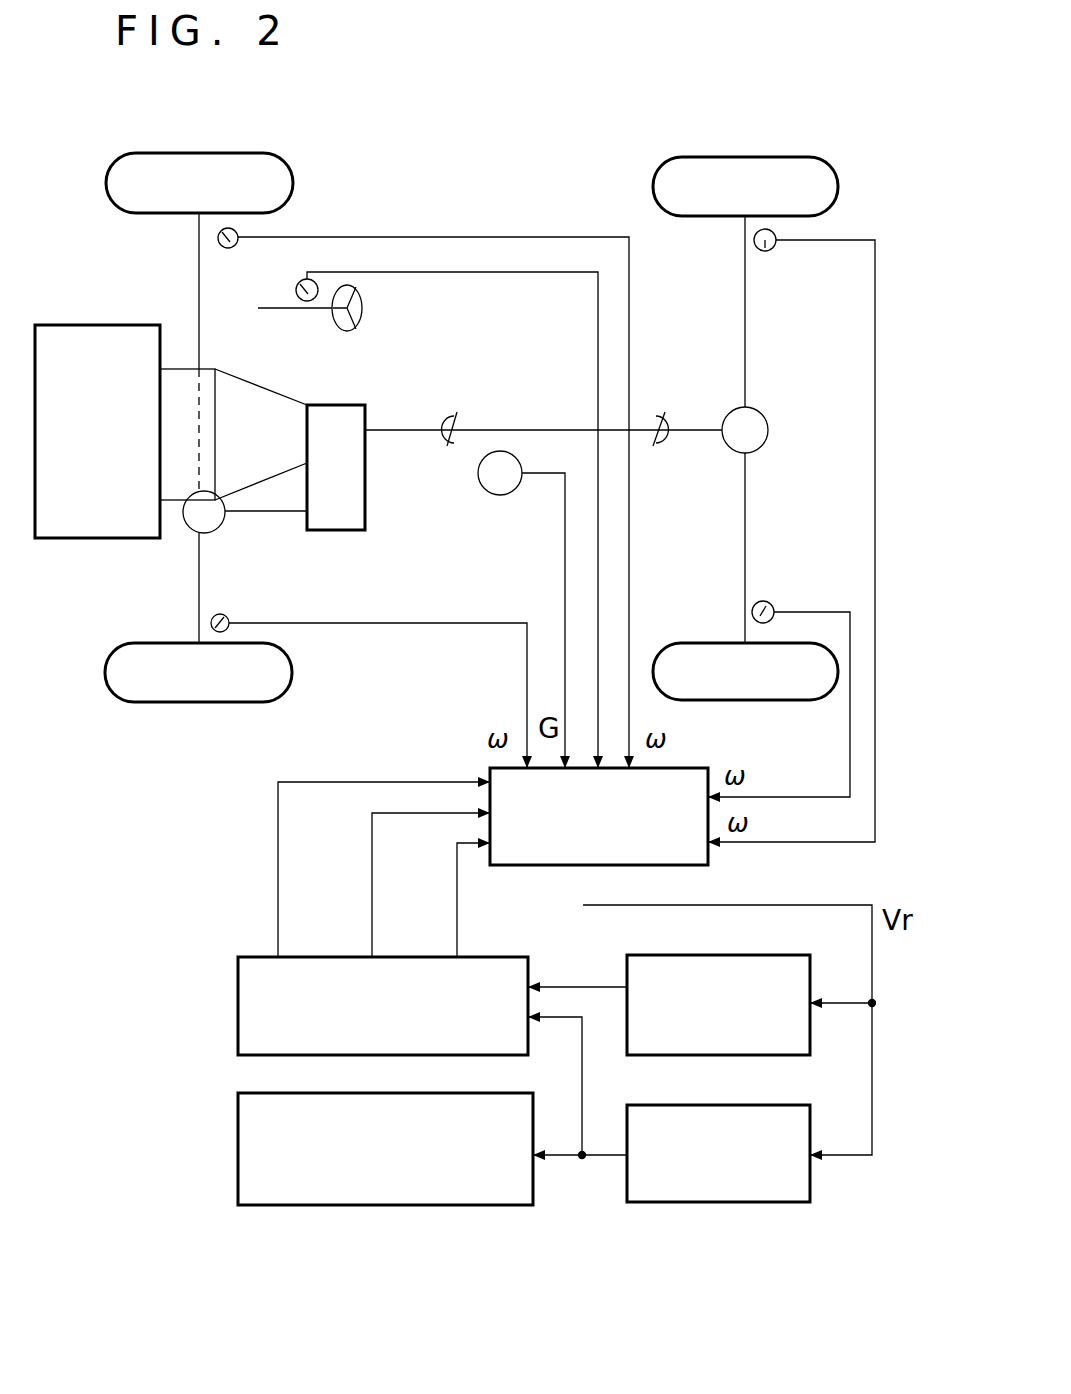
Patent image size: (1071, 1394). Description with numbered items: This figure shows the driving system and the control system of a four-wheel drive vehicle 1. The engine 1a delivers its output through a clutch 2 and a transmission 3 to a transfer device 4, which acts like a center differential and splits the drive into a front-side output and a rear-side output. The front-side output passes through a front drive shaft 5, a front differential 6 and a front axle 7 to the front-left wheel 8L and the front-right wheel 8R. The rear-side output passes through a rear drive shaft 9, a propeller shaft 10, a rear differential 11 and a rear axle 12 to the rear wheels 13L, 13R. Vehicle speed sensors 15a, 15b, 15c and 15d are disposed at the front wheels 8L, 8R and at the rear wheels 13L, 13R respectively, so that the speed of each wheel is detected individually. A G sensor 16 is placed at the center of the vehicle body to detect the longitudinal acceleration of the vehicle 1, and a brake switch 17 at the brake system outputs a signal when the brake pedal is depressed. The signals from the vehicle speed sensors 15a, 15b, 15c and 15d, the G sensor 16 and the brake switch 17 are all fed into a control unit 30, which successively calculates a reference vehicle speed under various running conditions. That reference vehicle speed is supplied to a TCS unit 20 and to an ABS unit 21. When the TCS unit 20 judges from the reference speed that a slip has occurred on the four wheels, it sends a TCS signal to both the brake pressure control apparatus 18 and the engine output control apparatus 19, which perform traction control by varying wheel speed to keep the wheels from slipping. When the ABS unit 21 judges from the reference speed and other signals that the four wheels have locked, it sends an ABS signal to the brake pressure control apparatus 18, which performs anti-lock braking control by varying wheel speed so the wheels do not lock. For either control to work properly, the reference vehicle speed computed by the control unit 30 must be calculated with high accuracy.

The four-wheel drive vehicle 1 is at (412, 175).
The engine 1a is at (65, 528).
The clutch 2 is at (180, 383).
The transmission 3 is at (263, 407).
The transfer device 4 is at (328, 520).
The front drive shaft 5 is at (245, 513).
The front differential 6 is at (195, 522).
The front axle 7 is at (199, 617).
The front-right wheel 8R is at (218, 173).
The front-left wheel 8L is at (182, 702).
The rear drive shaft 9 is at (385, 432).
The propeller shaft 10 is at (558, 431).
The rear differential 11 is at (760, 433).
The rear axle 12 is at (745, 508).
The rear-right wheel 13R is at (755, 175).
The rear wheel 13L is at (777, 685).
The vehicle speed sensor 15a is at (228, 248).
The vehicle speed sensor 15b is at (226, 614).
The vehicle speed sensor 15c is at (765, 251).
The vehicle speed sensor 15d is at (768, 602).
The G sensor 16 is at (488, 477).
The brake switch 17 is at (298, 290).
The brake pressure control apparatus 18 is at (247, 1005).
The engine output control apparatus 19 is at (247, 1157).
The TCS unit 20 is at (800, 1190).
The ABS unit 21 is at (795, 1045).
The control unit 30 is at (537, 868).